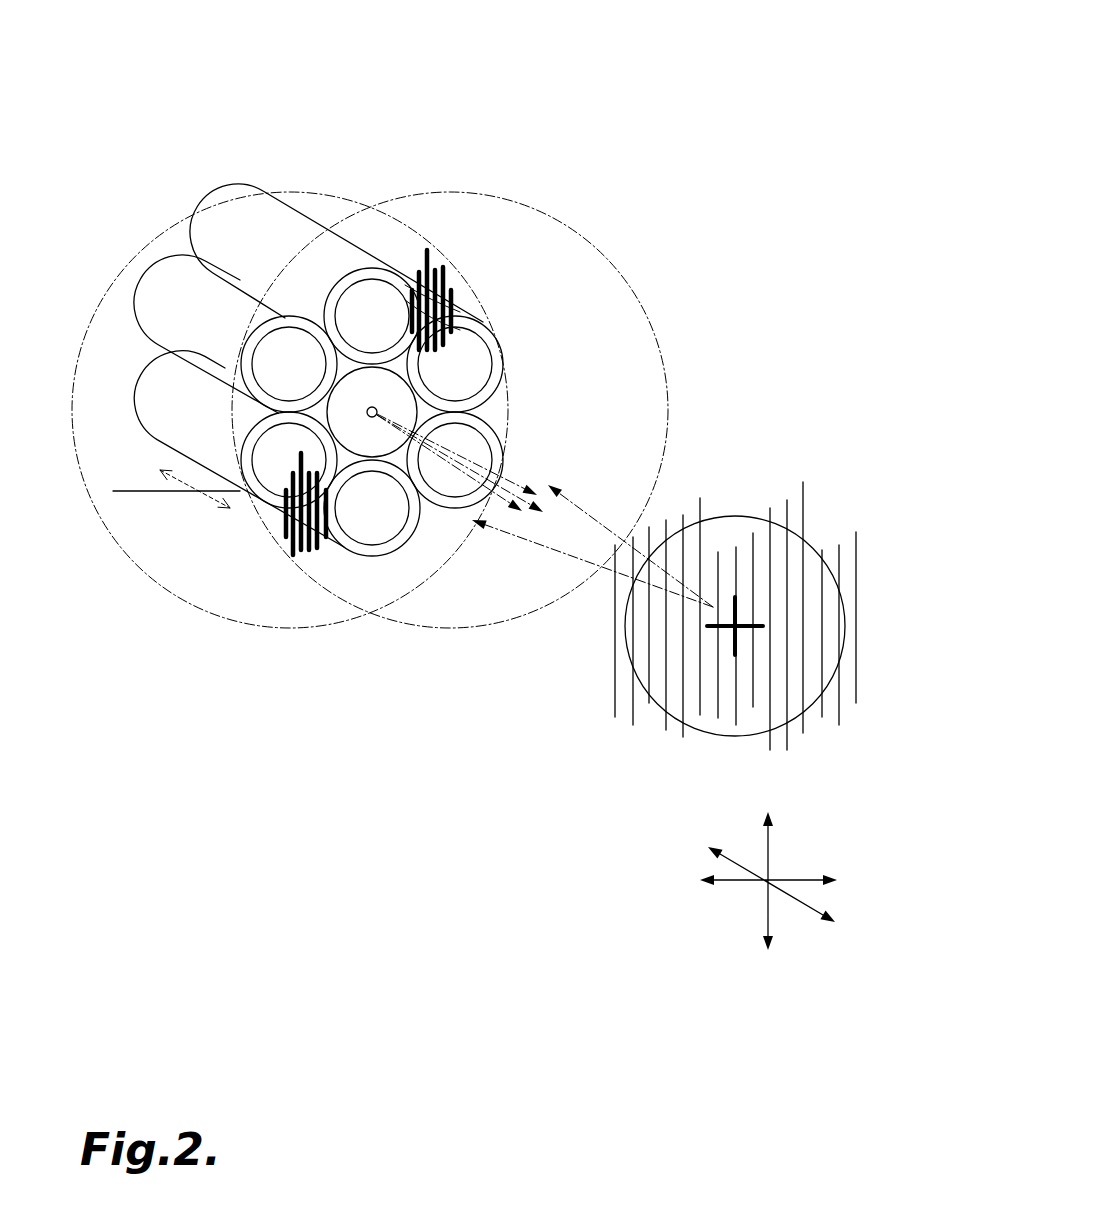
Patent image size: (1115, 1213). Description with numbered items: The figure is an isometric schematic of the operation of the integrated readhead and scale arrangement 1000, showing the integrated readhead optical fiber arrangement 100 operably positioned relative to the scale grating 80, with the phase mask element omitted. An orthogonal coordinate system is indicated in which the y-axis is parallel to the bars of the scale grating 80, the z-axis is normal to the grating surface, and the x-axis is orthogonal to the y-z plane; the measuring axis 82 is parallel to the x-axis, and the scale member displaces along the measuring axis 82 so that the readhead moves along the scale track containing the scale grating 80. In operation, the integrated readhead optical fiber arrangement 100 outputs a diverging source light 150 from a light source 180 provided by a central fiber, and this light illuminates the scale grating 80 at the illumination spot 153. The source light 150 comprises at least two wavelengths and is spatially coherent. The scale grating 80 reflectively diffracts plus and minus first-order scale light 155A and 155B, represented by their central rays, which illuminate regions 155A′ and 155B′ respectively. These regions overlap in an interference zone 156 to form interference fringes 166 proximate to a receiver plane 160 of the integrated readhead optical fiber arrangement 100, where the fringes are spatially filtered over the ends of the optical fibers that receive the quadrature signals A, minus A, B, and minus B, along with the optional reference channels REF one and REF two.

The integrated readhead and scale arrangement 1000 is at (694, 71).
The integrated readhead optical fiber arrangement 100 is at (272, 226).
The source light 150 is at (470, 497).
The illumination spot 153 is at (660, 713).
The +first-order scale light 155A is at (580, 507).
The -first-order scale light 155B is at (520, 537).
The illuminated region 155A′ is at (560, 216).
The illuminated region 155B′ is at (172, 222).
The interference zone 156 is at (412, 563).
The receiver plane 160 is at (160, 491).
The interference fringes 166 is at (452, 278).
The light source 180 is at (378, 411).
The scale grating 80 is at (600, 697).
The measuring axis 82 is at (796, 867).